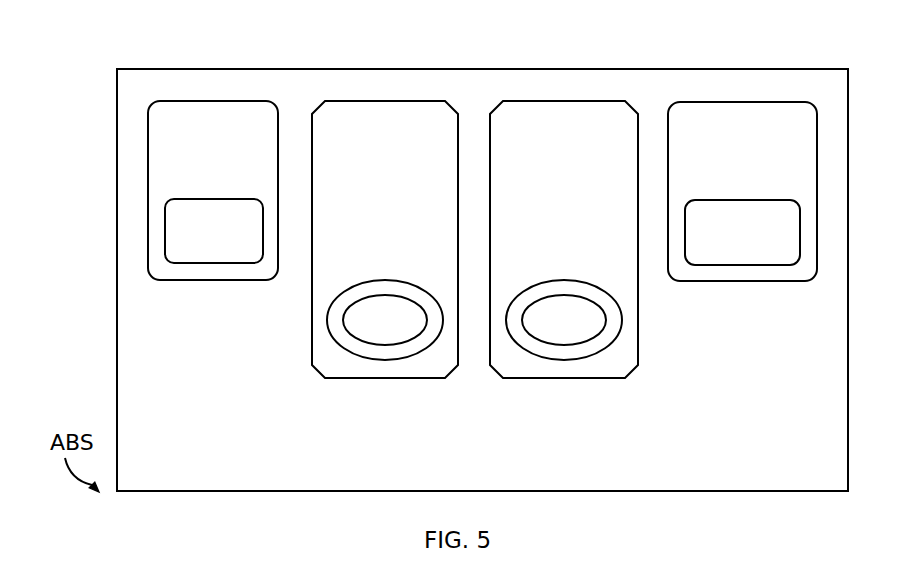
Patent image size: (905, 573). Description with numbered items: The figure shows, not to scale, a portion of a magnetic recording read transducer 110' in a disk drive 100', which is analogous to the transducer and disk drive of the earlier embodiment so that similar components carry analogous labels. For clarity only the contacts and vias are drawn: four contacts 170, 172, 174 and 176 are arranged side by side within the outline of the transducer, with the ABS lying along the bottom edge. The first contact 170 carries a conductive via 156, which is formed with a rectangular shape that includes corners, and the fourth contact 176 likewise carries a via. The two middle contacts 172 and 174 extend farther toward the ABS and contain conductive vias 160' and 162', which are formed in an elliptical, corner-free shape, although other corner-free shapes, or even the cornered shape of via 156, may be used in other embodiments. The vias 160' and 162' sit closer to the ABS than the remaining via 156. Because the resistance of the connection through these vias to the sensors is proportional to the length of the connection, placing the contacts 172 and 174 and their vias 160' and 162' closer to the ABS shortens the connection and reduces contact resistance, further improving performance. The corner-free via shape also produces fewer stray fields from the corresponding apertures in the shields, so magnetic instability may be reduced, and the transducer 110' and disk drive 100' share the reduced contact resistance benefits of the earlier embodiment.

The disk drive 100' is at (448, 249).
The magnetic recording read transducer 110' is at (482, 280).
The contact 170 is at (213, 190).
The contact 172 is at (385, 239).
The contact 174 is at (564, 239).
The contact 176 is at (742, 191).
The conductive via 156 is at (214, 231).
The conductive via 160' is at (385, 320).
The conductive via 162' is at (564, 320).